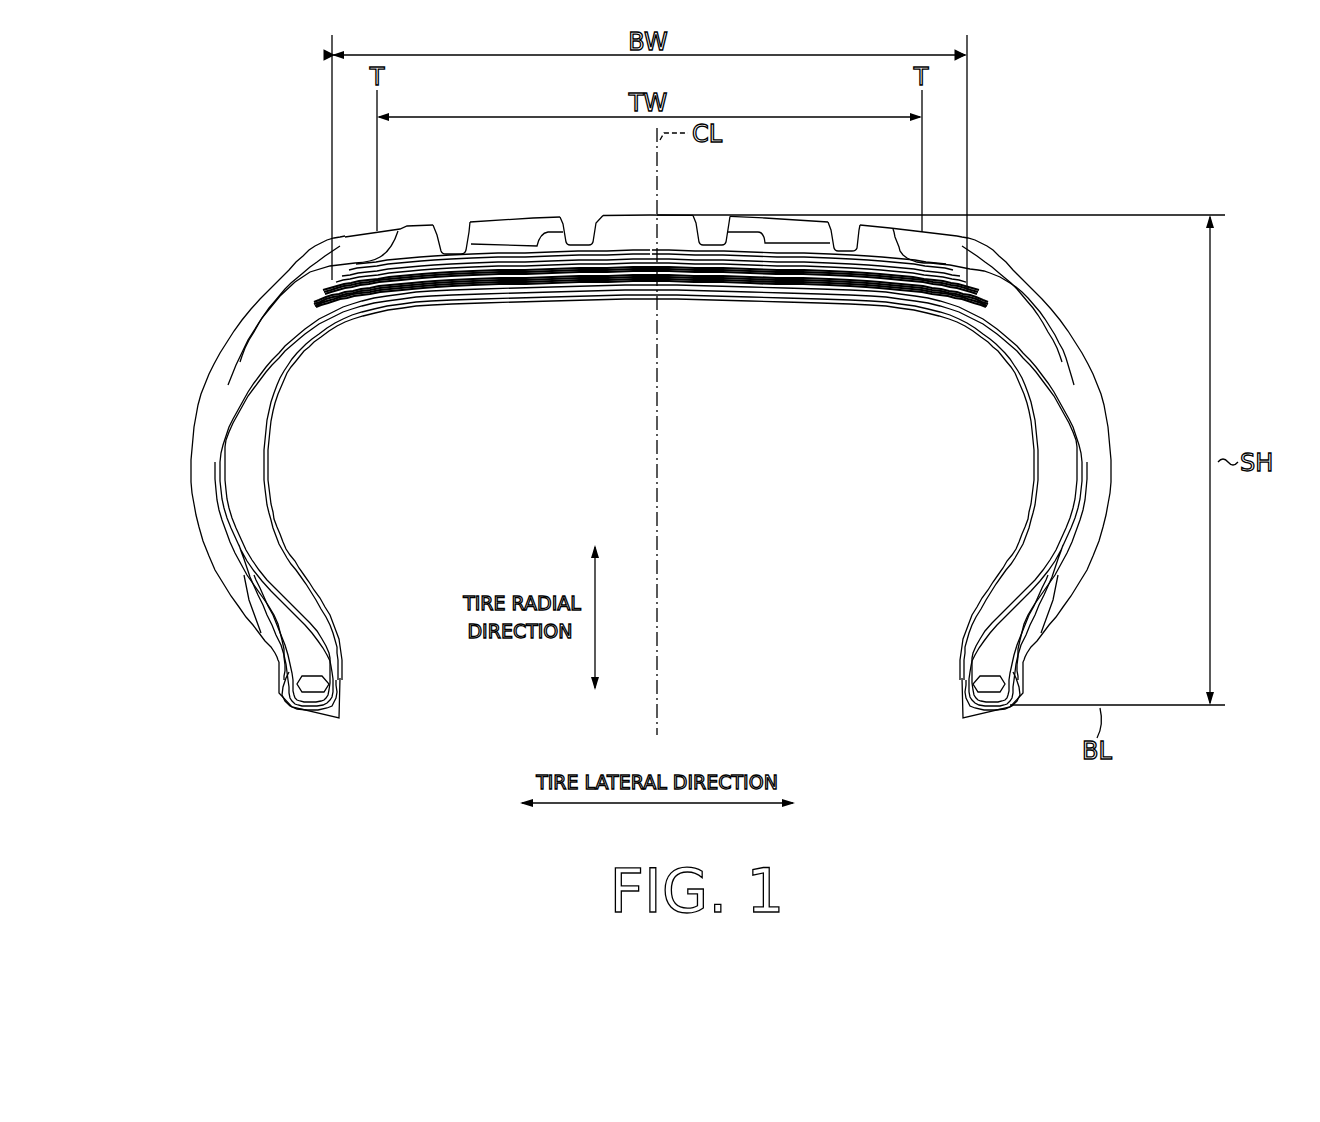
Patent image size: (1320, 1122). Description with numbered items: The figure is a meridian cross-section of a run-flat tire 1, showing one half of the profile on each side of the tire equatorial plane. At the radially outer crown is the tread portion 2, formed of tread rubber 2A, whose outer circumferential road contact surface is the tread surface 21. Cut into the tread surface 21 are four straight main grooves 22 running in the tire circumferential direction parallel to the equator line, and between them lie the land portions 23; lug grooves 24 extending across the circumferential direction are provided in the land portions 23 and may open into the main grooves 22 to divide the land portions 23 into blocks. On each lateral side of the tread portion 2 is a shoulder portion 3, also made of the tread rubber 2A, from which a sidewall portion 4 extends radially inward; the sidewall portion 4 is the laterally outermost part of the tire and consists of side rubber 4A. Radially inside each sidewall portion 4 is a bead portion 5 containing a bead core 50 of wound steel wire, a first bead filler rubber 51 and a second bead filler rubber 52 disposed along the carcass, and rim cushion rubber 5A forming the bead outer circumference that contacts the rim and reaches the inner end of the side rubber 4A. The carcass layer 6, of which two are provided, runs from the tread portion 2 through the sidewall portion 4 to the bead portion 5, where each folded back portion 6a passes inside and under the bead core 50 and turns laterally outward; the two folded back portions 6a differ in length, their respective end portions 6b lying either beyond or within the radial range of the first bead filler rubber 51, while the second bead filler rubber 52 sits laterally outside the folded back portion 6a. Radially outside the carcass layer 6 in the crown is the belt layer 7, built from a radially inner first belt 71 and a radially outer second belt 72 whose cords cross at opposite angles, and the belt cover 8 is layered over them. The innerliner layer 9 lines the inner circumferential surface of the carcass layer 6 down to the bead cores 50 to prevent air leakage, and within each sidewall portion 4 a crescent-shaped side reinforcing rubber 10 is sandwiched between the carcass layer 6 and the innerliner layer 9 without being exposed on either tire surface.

The run-flat tire 1 is at (855, 143).
The tread portion 2 is at (514, 202).
The tread rubber 2A is at (775, 226).
The tread surface 21 is at (482, 220).
The main groove 22 is at (462, 228).
The land portion 23 is at (385, 230).
The lug groove 24 is at (403, 227).
The shoulder portion 3 is at (268, 262).
The sidewall portion 4 is at (183, 412).
The side rubber 4A is at (198, 452).
The bead portion 5 is at (266, 688).
The rim cushion rubber 5A is at (263, 632).
The bead core 50 is at (312, 687).
The first bead filler rubber 51 is at (310, 658).
The second bead filler rubber 52 is at (230, 562).
The carcass layer 6 is at (1060, 370).
The folded back portion 6a is at (220, 502).
The end portion 6b is at (220, 400).
The belt layer 7 is at (797, 350).
The first belt 71 is at (820, 288).
The second belt 72 is at (855, 288).
The belt cover 8 is at (358, 267).
The innerliner layer 9 is at (997, 342).
The side reinforcing rubber 10 is at (1033, 493).